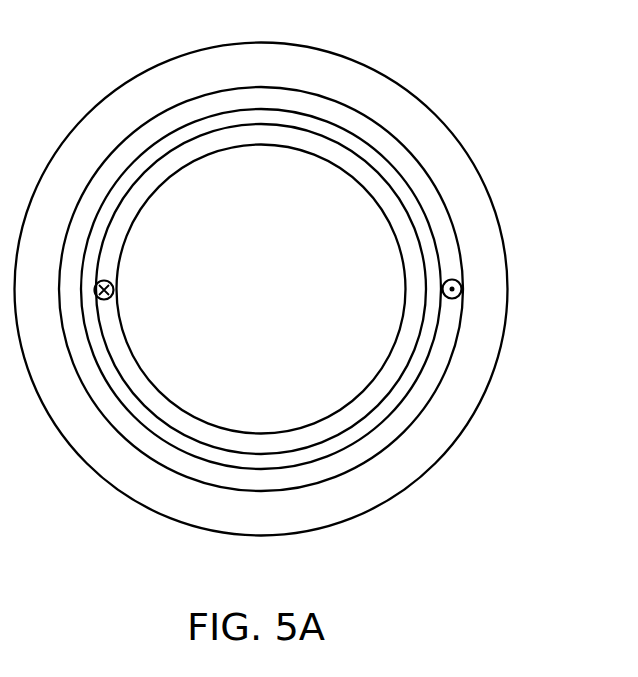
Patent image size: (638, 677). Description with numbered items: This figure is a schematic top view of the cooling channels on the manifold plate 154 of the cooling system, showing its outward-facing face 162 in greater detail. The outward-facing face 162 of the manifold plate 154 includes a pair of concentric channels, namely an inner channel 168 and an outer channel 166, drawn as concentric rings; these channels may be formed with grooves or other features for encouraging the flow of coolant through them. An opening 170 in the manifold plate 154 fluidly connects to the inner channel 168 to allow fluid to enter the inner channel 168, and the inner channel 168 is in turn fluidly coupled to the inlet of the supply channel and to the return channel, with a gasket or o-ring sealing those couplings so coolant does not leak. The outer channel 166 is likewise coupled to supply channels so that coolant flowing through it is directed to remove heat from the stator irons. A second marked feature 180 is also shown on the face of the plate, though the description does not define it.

The manifold plate 154 is at (507, 289).
The outward-facing face 162 is at (138, 97).
The outer channel 166 is at (402, 155).
The inner channel 168 is at (357, 415).
The opening 170 is at (442, 289).
The conductor with current into page 180 is at (113, 290).